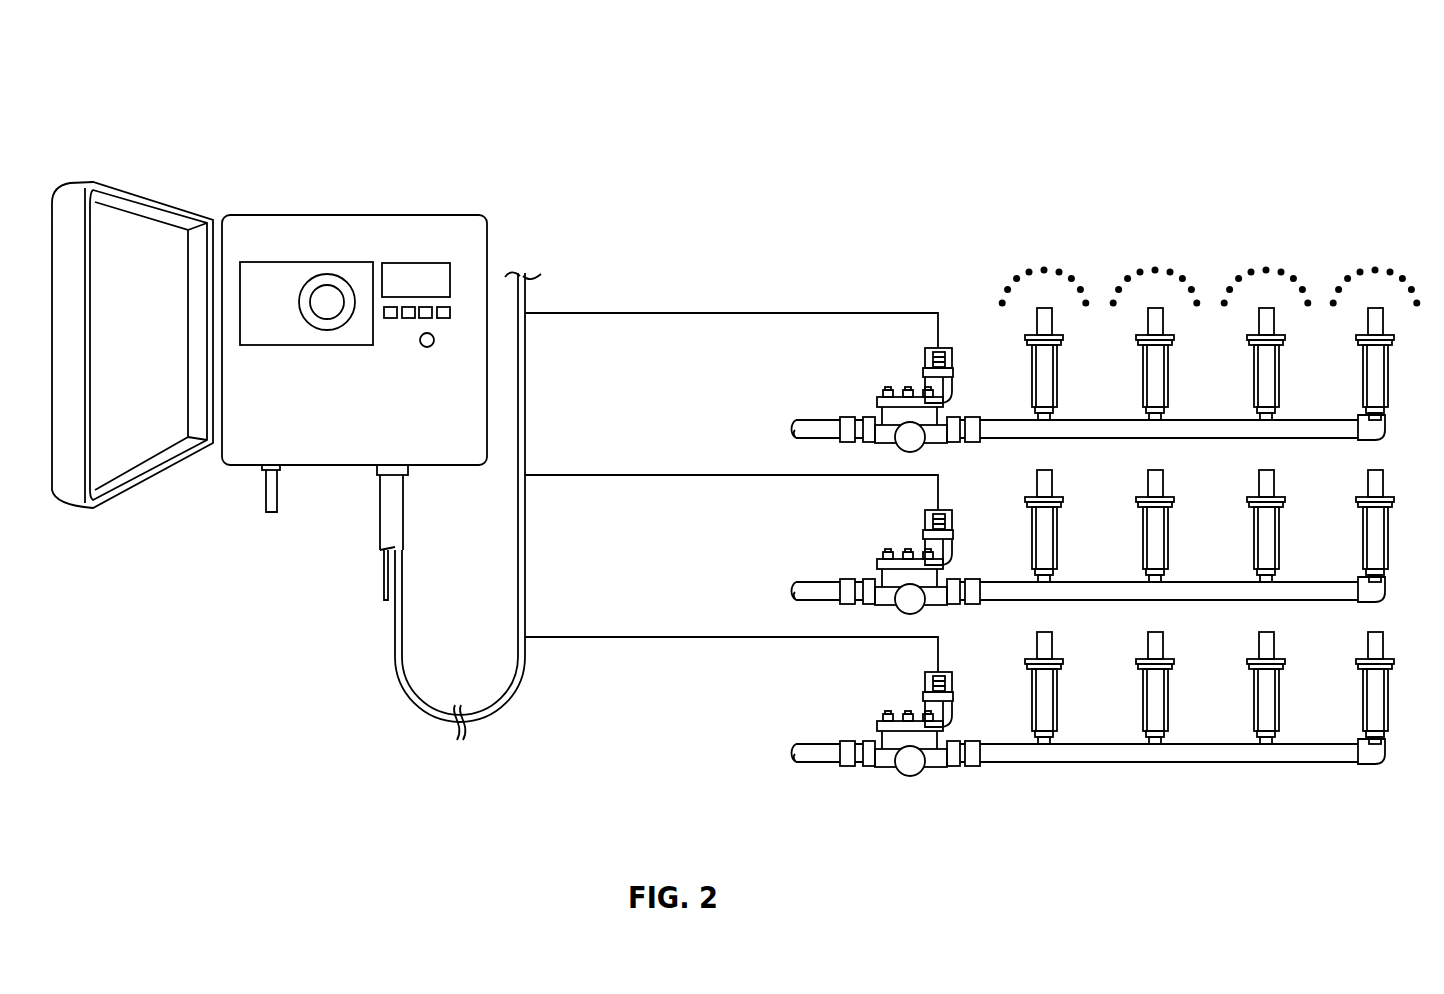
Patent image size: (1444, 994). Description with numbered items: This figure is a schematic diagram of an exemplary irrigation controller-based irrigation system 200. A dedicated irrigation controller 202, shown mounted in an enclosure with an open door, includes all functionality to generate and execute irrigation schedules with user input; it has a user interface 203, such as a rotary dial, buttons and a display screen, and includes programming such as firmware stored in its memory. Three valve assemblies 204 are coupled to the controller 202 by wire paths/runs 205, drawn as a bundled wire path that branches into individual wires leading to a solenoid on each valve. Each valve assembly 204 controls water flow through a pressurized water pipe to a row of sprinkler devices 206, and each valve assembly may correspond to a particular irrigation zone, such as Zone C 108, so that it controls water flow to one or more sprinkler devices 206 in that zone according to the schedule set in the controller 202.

The irrigation controller-based irrigation system 200 is at (1309, 74).
The irrigation controller 202 is at (392, 227).
The user interface 203 is at (292, 285).
The Zone C 108 is at (680, 312).
The valve assemblies 204 is at (878, 312).
The wire paths/runs 205 is at (428, 720).
The sprinkler devices 206 is at (1212, 212).